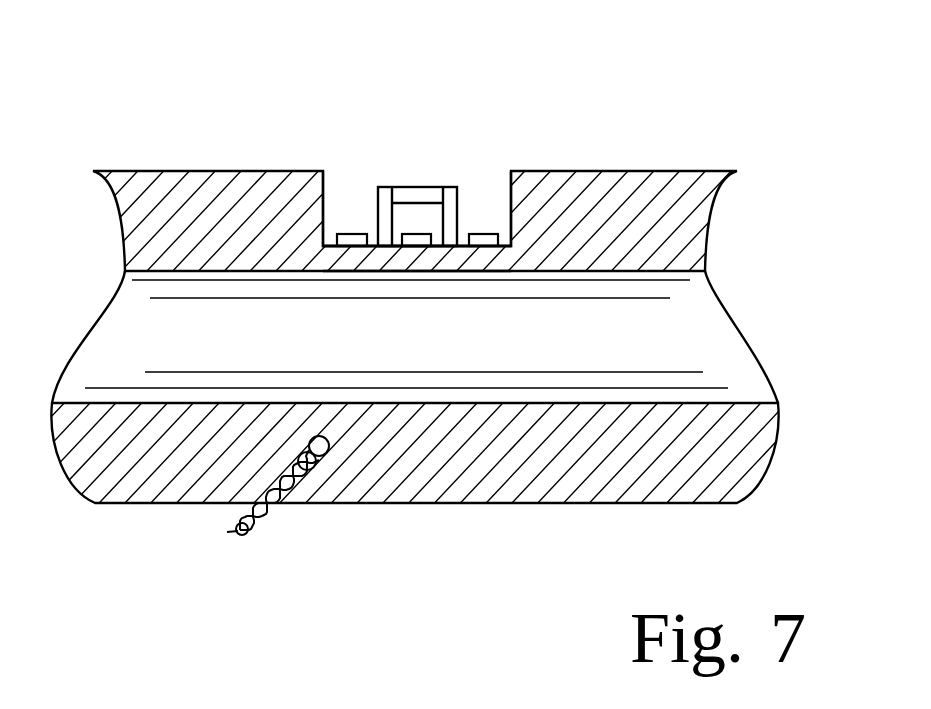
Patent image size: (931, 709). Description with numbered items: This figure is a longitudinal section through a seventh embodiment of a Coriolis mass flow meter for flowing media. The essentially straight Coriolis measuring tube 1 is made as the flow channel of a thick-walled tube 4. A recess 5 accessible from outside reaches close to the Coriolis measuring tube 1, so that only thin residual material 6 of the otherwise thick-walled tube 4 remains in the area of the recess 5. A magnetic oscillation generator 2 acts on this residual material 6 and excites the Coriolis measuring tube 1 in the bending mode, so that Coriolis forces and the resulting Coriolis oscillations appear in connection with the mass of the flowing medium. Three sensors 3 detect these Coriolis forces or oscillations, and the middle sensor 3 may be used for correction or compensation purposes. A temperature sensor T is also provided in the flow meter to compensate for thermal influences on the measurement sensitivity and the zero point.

The Coriolis measuring tube 1 is at (640, 403).
The oscillation generator 2 is at (410, 193).
The sensor 3 is at (350, 233).
The thick-walled tube 4 is at (678, 237).
The recess 5 is at (513, 215).
The residual material 6 is at (375, 262).
The temperature sensor T is at (316, 464).